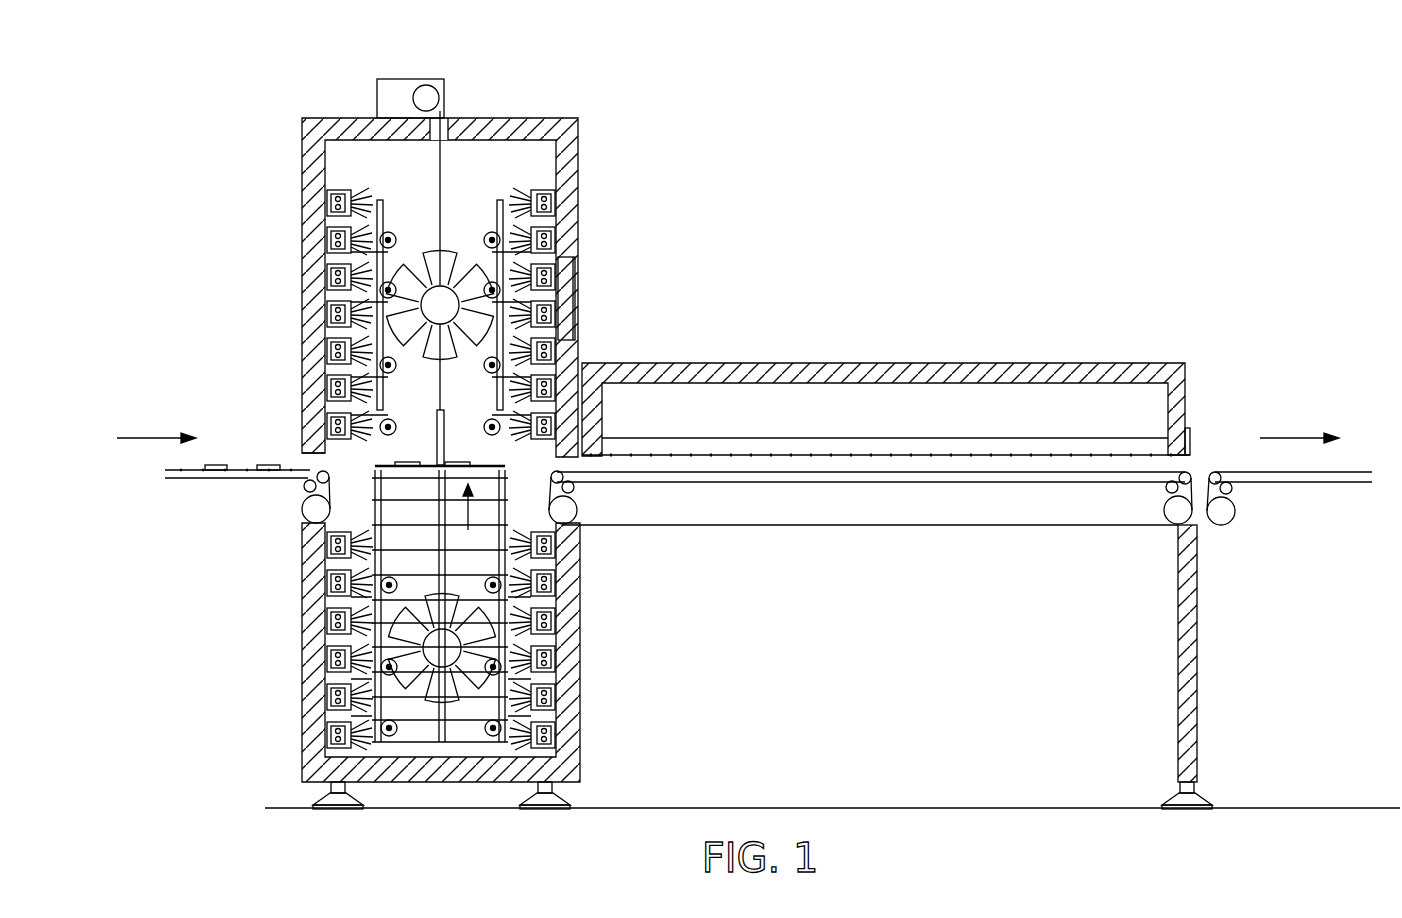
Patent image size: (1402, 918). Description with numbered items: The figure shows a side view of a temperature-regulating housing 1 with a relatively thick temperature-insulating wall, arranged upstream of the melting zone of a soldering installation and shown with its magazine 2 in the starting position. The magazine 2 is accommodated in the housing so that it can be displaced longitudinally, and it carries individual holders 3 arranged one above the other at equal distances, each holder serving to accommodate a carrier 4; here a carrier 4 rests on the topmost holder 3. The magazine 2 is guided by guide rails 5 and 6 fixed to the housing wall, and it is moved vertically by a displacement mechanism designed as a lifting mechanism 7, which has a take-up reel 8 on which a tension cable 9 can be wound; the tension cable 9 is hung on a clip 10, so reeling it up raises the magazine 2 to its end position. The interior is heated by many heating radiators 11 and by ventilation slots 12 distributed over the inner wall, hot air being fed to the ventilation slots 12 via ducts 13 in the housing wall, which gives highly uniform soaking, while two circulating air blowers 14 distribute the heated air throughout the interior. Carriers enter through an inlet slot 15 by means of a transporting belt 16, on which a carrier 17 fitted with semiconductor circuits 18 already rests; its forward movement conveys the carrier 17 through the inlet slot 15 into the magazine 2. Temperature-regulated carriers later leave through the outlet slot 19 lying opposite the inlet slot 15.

The temperature-regulating housing 1 is at (567, 168).
The magazine 2 is at (373, 557).
The holder 3 is at (420, 572).
The carrier 4 is at (430, 452).
The guide rail 5 is at (380, 200).
The guide rail 6 is at (501, 200).
The lifting mechanism 7 is at (397, 92).
The take-up reel 8 is at (426, 86).
The tension cable 9 is at (443, 160).
The clip 10 is at (446, 420).
The heating radiator 11 is at (357, 190).
The ventilation slot 12 is at (558, 298).
The duct 13 is at (568, 316).
The circulating air blower 14 is at (424, 270).
The inlet slot 15 is at (313, 463).
The transporting belt 16 is at (250, 483).
The carrier 17 is at (247, 463).
The semiconductor circuits 18 is at (223, 465).
The outlet slot 19 is at (567, 462).